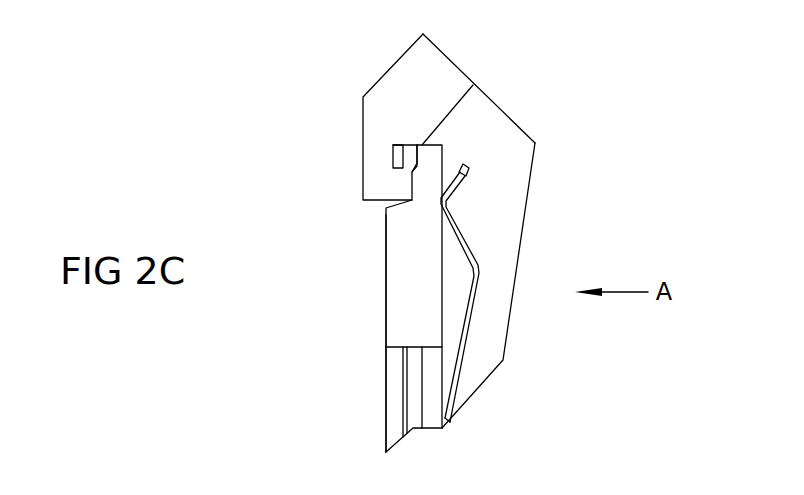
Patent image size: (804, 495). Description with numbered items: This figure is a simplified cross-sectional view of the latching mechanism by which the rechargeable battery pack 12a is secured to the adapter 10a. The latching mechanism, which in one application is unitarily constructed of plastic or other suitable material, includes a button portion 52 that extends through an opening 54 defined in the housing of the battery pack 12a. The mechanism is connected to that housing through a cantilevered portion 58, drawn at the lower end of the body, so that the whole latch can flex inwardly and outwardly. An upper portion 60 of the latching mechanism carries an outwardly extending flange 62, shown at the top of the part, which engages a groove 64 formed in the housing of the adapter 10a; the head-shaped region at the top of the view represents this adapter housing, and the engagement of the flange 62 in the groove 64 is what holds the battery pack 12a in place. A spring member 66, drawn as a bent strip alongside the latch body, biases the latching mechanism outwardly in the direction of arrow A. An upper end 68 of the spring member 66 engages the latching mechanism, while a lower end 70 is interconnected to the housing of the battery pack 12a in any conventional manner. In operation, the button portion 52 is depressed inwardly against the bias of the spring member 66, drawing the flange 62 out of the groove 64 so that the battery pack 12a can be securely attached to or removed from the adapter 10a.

The adapter 10a is at (385, 75).
The battery pack 12a is at (386, 420).
The button portion 52 is at (400, 283).
The opening 54 is at (400, 347).
The cantilevered portion 58 is at (414, 430).
The upper portion 60 is at (428, 153).
The outwardly extending flange 62 is at (404, 167).
The groove 64 is at (410, 166).
The spring member 66 is at (487, 253).
The upper end 68 is at (466, 172).
The lower end 70 is at (445, 415).